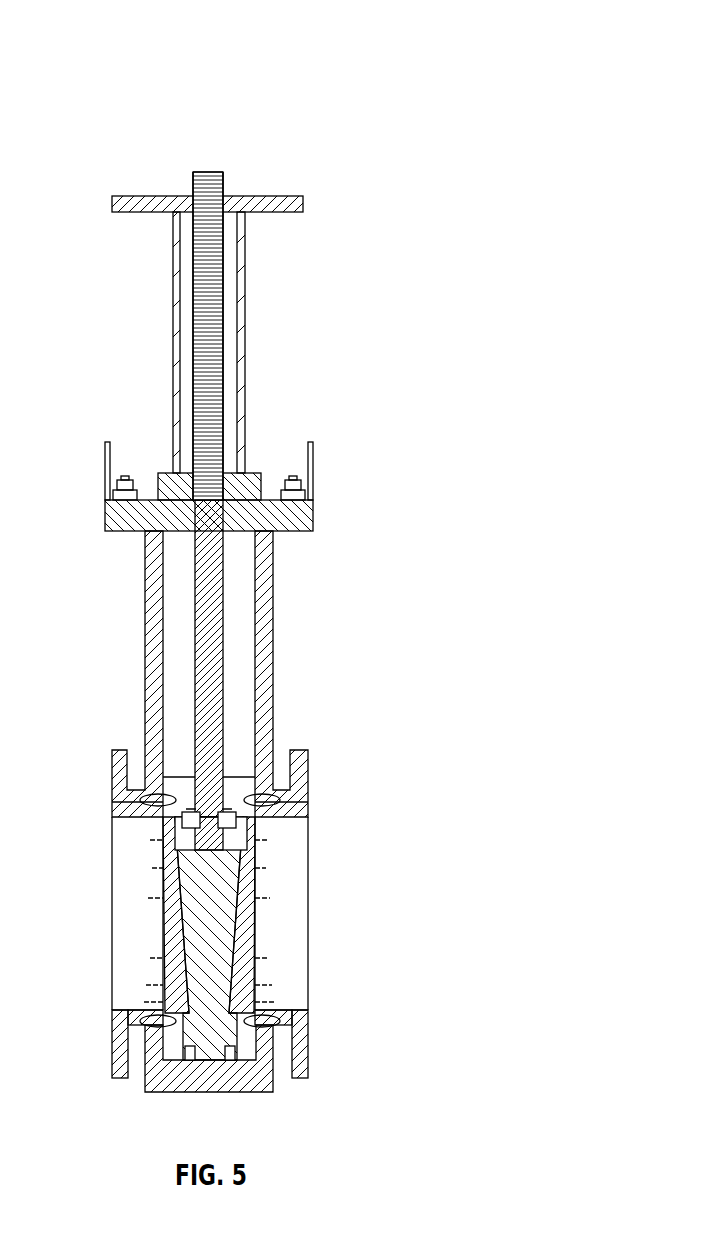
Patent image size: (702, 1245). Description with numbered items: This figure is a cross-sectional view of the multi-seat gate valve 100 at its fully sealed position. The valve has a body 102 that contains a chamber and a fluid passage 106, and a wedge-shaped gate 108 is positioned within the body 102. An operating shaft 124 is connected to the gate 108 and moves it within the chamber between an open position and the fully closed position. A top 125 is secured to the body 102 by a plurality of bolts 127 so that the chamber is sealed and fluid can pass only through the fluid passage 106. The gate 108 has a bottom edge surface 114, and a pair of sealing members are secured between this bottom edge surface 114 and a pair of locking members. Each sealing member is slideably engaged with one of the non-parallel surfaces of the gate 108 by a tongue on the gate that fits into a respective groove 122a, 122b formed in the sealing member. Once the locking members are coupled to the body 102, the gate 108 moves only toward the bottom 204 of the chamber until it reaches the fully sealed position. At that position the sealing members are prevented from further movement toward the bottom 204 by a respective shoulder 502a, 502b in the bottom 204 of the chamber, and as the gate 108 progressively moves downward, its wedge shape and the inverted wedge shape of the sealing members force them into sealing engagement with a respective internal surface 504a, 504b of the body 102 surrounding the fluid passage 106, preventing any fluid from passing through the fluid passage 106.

The multi-seat gate valve 100 is at (308, 578).
The operating shaft 124 is at (222, 186).
The bolts 127 is at (125, 478).
The top 125 is at (270, 490).
The body 102 is at (150, 640).
The gate 108 is at (240, 812).
The fluid passage 106 is at (292, 868).
The groove 122a is at (165, 916).
The groove 122b is at (256, 917).
The shoulder 502a is at (165, 978).
The shoulder 502b is at (256, 978).
The internal surface 504a is at (150, 800).
The internal surface 504b is at (268, 800).
The bottom edge surface 114 is at (188, 1062).
The bottom 204 is at (262, 1080).